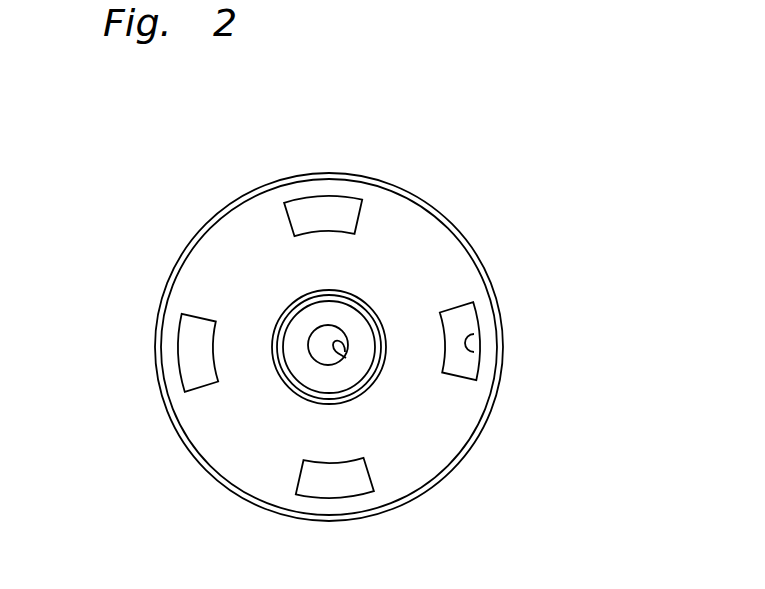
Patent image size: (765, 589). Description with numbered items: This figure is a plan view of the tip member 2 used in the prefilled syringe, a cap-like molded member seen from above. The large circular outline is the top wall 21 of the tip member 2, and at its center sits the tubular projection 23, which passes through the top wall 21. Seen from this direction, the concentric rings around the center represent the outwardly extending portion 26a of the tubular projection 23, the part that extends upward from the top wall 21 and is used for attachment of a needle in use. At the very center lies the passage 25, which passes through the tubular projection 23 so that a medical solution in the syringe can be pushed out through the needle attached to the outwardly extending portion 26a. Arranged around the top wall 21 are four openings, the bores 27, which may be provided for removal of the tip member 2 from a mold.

The tip member 2 is at (353, 289).
The top wall 21 is at (217, 425).
The tubular projection 23 is at (368, 307).
The passage 25 is at (346, 358).
The outwardly extending portion 26a is at (295, 343).
The bores 27 is at (470, 352).